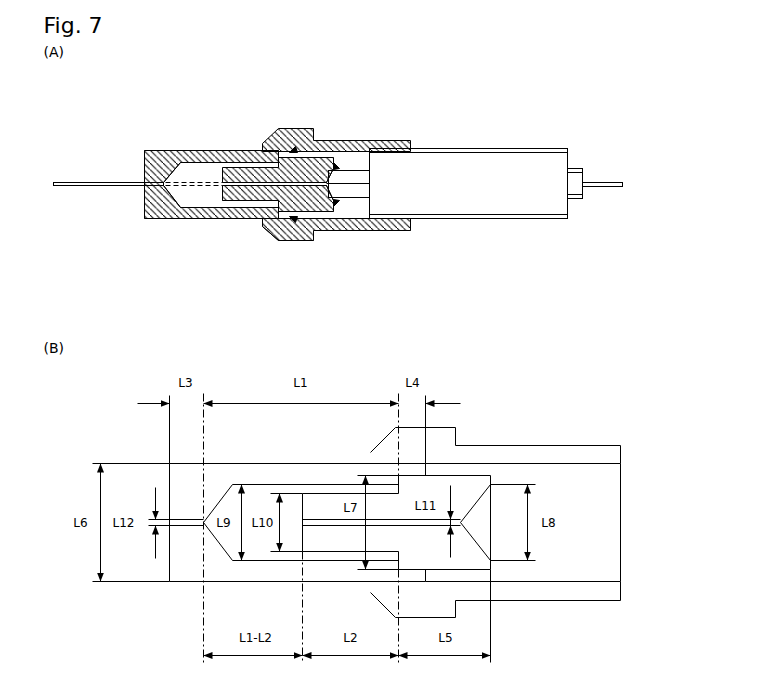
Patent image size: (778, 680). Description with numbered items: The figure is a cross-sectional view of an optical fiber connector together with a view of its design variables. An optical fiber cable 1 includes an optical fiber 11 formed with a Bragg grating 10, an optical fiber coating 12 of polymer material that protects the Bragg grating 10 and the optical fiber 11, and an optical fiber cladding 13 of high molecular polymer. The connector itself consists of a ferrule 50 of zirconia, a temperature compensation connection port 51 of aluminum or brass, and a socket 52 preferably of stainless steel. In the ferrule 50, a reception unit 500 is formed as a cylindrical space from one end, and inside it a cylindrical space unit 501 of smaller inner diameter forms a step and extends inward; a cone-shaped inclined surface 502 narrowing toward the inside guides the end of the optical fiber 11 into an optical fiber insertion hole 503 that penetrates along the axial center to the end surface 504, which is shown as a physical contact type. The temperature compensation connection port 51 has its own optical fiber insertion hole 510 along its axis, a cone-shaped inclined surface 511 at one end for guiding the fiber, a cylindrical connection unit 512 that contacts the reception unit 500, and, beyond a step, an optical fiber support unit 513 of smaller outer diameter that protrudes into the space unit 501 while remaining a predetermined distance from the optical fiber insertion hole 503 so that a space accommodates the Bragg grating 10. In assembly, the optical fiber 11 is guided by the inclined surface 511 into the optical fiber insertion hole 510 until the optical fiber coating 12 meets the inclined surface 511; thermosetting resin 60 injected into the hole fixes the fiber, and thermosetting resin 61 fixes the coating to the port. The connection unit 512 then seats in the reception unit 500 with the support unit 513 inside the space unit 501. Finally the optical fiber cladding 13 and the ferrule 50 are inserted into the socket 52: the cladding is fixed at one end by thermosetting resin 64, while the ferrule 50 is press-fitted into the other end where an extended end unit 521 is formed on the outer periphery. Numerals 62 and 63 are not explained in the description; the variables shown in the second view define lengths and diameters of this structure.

The optical fiber cable 1 is at (473, 146).
The Bragg grating 10 is at (177, 209).
The optical fiber 11 is at (64, 180).
The optical fiber coating 12 is at (581, 167).
The optical fiber cladding 13 is at (513, 148).
The ferrule 50 is at (147, 143).
The reception unit 500 is at (289, 154).
The space unit 501 is at (207, 217).
The cone-shaped inclined surface 502 is at (180, 184).
The optical fiber insertion hole 503 is at (157, 152).
The end surface 504 is at (144, 168).
The temperature compensation connection port 51 is at (224, 160).
The optical fiber insertion hole 510 is at (258, 165).
The cone-shaped inclined surface 511 is at (317, 207).
The connection unit 512 is at (293, 150).
The optical fiber support unit 513 is at (240, 202).
The socket 52 is at (357, 139).
The extended end unit 521 is at (270, 228).
The thermosetting resin 60 is at (297, 216).
The thermosetting resin 61 is at (335, 203).
The flange end face 62 is at (290, 231).
The fiber insertion opening 63 is at (143, 186).
The thermosetting resin 64 is at (413, 222).